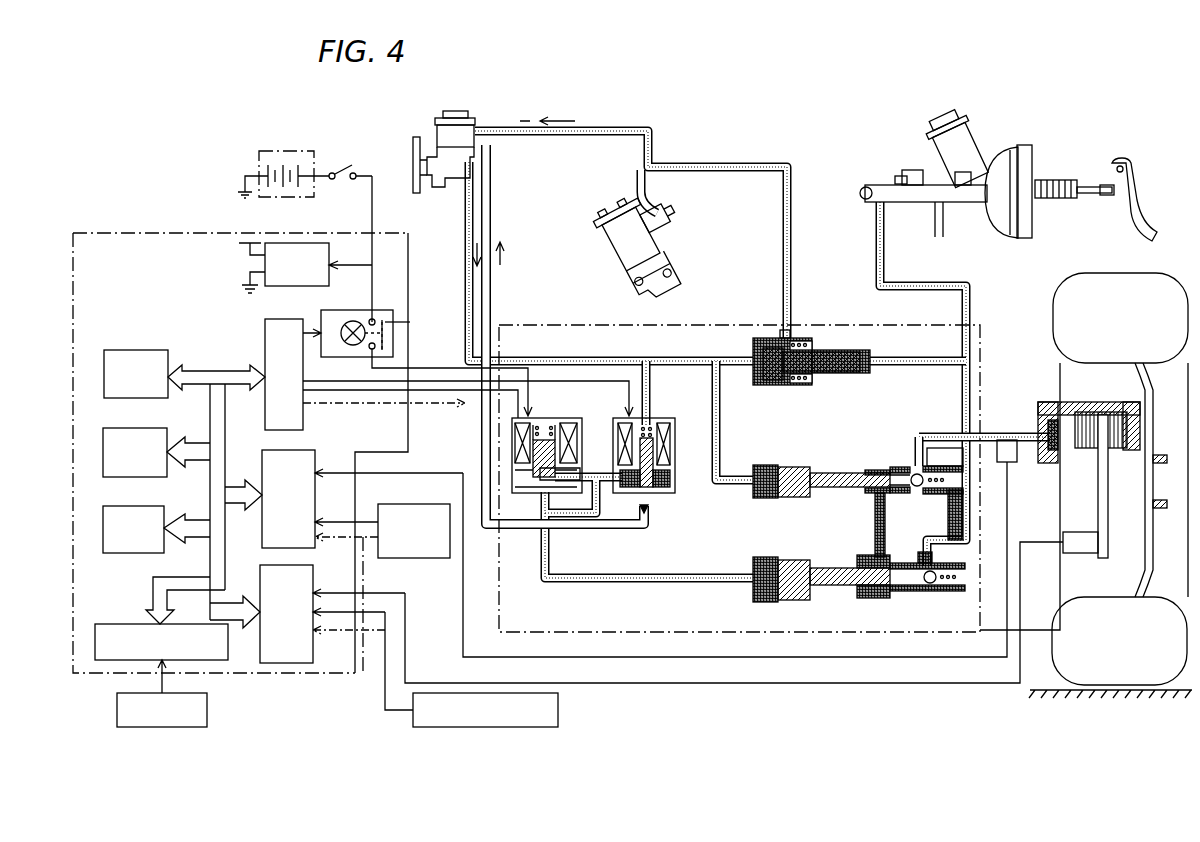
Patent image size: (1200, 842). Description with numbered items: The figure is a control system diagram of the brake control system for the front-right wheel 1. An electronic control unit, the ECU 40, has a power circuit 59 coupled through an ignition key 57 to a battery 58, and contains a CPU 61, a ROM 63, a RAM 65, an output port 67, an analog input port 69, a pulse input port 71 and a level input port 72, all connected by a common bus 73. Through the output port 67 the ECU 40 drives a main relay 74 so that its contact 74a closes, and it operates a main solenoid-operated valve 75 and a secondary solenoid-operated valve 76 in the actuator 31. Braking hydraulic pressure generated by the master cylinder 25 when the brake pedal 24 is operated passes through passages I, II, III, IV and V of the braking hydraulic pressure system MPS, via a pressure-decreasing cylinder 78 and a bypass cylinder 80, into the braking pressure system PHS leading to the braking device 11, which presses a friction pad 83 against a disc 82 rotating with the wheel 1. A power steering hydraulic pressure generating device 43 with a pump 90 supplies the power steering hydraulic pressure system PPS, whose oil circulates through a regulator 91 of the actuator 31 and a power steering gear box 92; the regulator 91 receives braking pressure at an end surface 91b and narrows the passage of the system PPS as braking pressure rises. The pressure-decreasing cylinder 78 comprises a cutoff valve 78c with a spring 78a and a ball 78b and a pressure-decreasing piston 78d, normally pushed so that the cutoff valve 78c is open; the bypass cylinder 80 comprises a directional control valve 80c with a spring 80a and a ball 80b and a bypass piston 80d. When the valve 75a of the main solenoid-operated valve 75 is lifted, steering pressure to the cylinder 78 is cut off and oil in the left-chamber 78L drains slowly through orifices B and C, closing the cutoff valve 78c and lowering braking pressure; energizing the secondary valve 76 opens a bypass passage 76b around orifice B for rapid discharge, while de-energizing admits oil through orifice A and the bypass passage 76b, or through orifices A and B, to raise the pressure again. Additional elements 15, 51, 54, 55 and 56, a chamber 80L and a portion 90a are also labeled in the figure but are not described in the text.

The front-right wheel 1 is at (1105, 273).
The braking device 11 is at (1084, 464).
The wheel speed sensor 15 is at (1080, 553).
The brake pedal 24 is at (1135, 178).
The master cylinder 25 is at (991, 158).
The actuator 31 is at (712, 325).
The ECU 40 is at (180, 233).
The power steering hydraulic pressure generating device 43 is at (624, 120).
The pressure sensor 51 is at (1017, 450).
The acceleration sensor 54 is at (414, 504).
The steering amount sensor 55 is at (558, 710).
The brake sensor 56 is at (207, 711).
The ignition key 57 is at (347, 167).
The battery 58 is at (300, 151).
The power circuit 59 is at (332, 251).
The CPU 61 is at (133, 350).
The ROM 63 is at (134, 429).
The RAM 65 is at (122, 553).
The output port 67 is at (265, 338).
The analog input port 69 is at (300, 452).
The pulse input port 71 is at (282, 663).
The level input port 72 is at (115, 624).
The common bus 73 is at (210, 494).
The main relay 74 is at (350, 310).
The contact 74a is at (416, 323).
The main solenoid-operated valve 75 is at (666, 463).
The valve 75a is at (656, 488).
The secondary solenoid-operated valve 76 is at (560, 418).
The bypass passage 76b is at (598, 470).
The pressure-decreasing cylinder 78 is at (868, 573).
The spring 78a is at (934, 565).
The ball 78b is at (932, 590).
The cutoff valve 78c is at (917, 600).
The pressure-decreasing piston 78d is at (825, 585).
The left-chamber 78L is at (753, 565).
The bypass cylinder 80 is at (858, 484).
The spring 80a is at (945, 463).
The ball 80b is at (893, 492).
The directional control valve 80c is at (918, 538).
The bypass piston 80d is at (838, 473).
The cylinder chamber 80L is at (760, 498).
The disc 82 is at (1098, 516).
The friction pad 83 is at (1090, 450).
The power steering hydraulic pressure pump 90 is at (453, 111).
The valve piston 90a is at (778, 385).
The regulator 91 is at (837, 376).
The end surface 91b is at (870, 373).
The power steering gear box 92 is at (612, 213).
The orifice A is at (650, 412).
The orifice B is at (562, 520).
The orifice C is at (651, 514).
The passage I is at (960, 350).
The passage II is at (949, 515).
The passage III is at (878, 542).
The passage IV is at (875, 527).
The passage V is at (915, 455).
The power steering hydraulic pressure system PPS is at (463, 218).
The braking hydraulic pressure system MPS is at (937, 283).
The braking pressure system PHS is at (1010, 432).